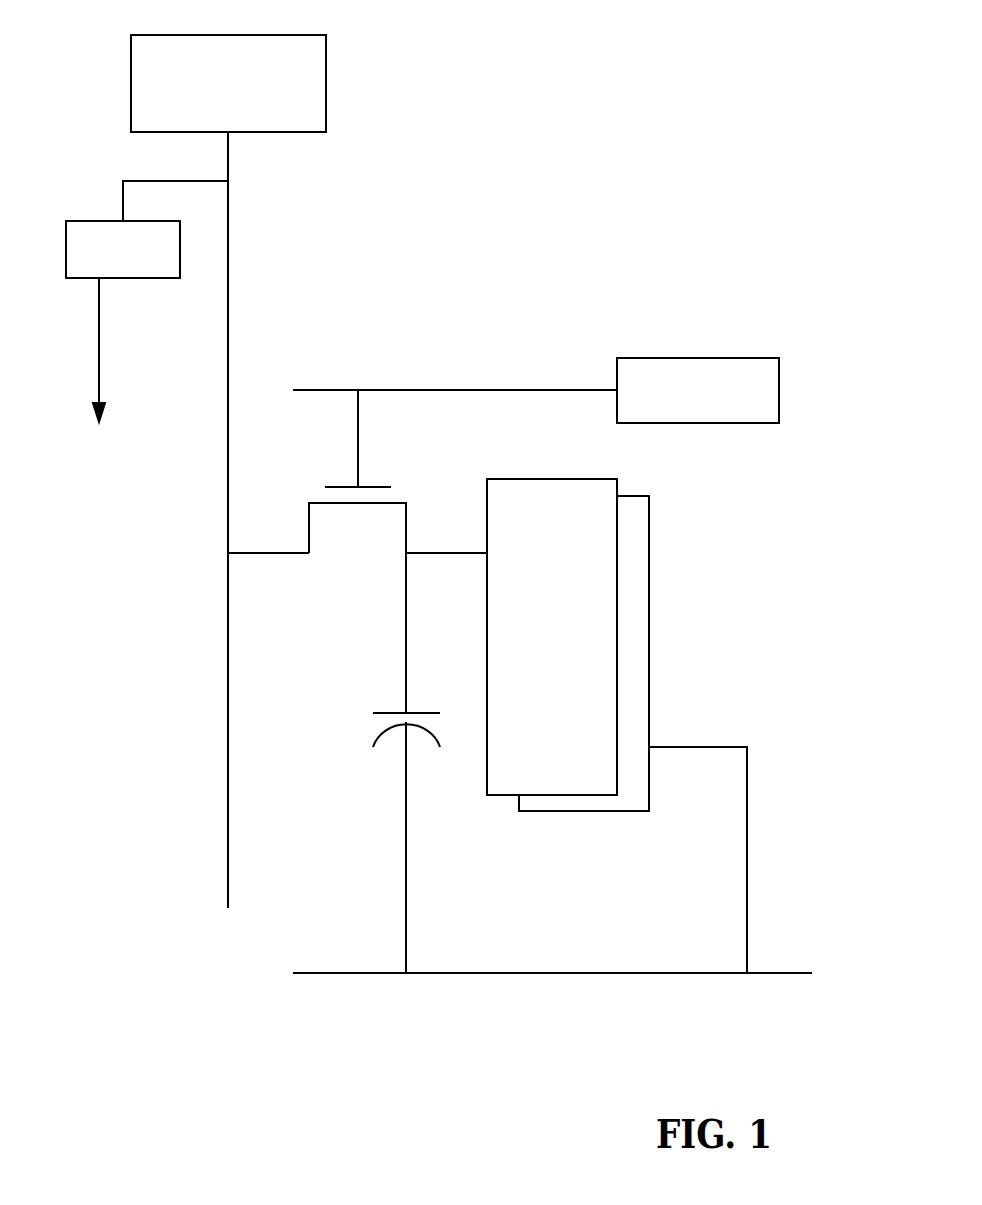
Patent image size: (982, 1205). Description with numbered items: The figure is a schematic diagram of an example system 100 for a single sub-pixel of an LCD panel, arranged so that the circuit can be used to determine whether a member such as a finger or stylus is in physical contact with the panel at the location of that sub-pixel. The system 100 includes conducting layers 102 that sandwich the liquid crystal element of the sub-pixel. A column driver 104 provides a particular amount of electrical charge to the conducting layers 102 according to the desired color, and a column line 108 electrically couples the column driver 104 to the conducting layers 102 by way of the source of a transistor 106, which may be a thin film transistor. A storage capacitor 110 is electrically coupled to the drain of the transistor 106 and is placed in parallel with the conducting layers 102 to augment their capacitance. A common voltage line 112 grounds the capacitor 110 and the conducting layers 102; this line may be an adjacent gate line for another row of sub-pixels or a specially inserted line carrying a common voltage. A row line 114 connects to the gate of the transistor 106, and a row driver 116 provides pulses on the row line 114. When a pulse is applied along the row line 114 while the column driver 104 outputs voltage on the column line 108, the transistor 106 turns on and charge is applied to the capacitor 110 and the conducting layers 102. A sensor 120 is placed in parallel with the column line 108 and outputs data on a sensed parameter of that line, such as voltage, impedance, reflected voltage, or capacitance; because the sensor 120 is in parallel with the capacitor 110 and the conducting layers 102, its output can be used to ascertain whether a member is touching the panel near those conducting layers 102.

The system 100 is at (598, 90).
The conducting layers 102 is at (698, 510).
The column driver 104 is at (326, 65).
The transistor 106 is at (406, 460).
The column line 108 is at (228, 212).
The storage capacitor 110 is at (362, 684).
The common voltage line 112 is at (553, 973).
The row line 114 is at (455, 390).
The row driver 116 is at (683, 358).
The sensor 120 is at (148, 278).